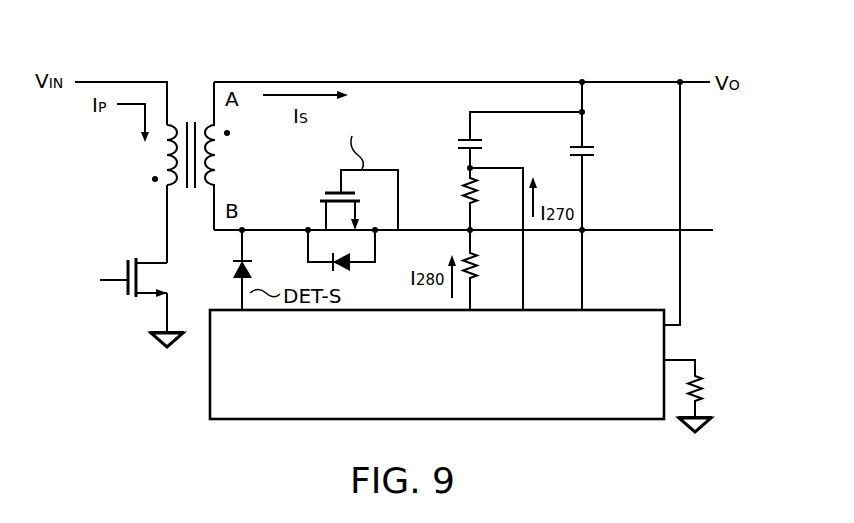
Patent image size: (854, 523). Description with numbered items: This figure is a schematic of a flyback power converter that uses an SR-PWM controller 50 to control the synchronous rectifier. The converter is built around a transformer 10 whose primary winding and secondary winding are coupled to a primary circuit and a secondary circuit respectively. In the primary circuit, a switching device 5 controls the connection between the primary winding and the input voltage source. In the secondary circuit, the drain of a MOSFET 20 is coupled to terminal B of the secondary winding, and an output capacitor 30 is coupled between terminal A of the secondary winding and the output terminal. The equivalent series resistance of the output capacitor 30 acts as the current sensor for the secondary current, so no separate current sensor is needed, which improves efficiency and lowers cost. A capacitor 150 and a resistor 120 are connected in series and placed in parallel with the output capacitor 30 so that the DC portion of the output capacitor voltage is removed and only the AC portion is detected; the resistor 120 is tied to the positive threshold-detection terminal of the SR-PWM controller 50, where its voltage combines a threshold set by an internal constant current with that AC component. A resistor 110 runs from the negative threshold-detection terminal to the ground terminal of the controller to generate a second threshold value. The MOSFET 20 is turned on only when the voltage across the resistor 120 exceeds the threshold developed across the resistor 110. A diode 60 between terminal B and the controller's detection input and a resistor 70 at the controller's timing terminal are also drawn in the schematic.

The transformer 10 is at (192, 118).
The switching device 5 is at (127, 260).
The detection diode 60 is at (234, 267).
The MOSFET 20 is at (323, 194).
The capacitor 150 is at (457, 141).
The resistor 120 is at (462, 195).
The resistor 110 is at (487, 266).
The output capacitor 30 is at (598, 151).
The SR-PWM controller 50 is at (208, 392).
The timing resistor 70 is at (710, 392).